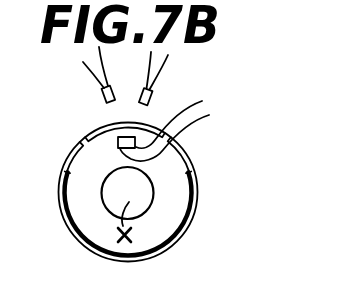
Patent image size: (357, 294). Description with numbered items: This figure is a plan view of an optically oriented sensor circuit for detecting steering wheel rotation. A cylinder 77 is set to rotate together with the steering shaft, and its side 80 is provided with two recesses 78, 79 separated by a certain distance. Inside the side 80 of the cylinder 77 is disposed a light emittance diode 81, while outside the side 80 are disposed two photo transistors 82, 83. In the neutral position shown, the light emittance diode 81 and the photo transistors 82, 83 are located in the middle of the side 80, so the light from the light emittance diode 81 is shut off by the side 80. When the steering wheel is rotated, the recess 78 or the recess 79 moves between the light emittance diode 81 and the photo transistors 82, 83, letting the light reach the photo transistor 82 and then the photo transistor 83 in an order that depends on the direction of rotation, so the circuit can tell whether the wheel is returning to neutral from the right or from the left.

The cylinder 77 is at (62, 203).
The recess 78 is at (65, 160).
The recess 79 is at (181, 159).
The side 80 is at (89, 132).
The light emittance diode 81 is at (117, 147).
The photo transistor 82 is at (101, 99).
The photo transistor 83 is at (152, 98).